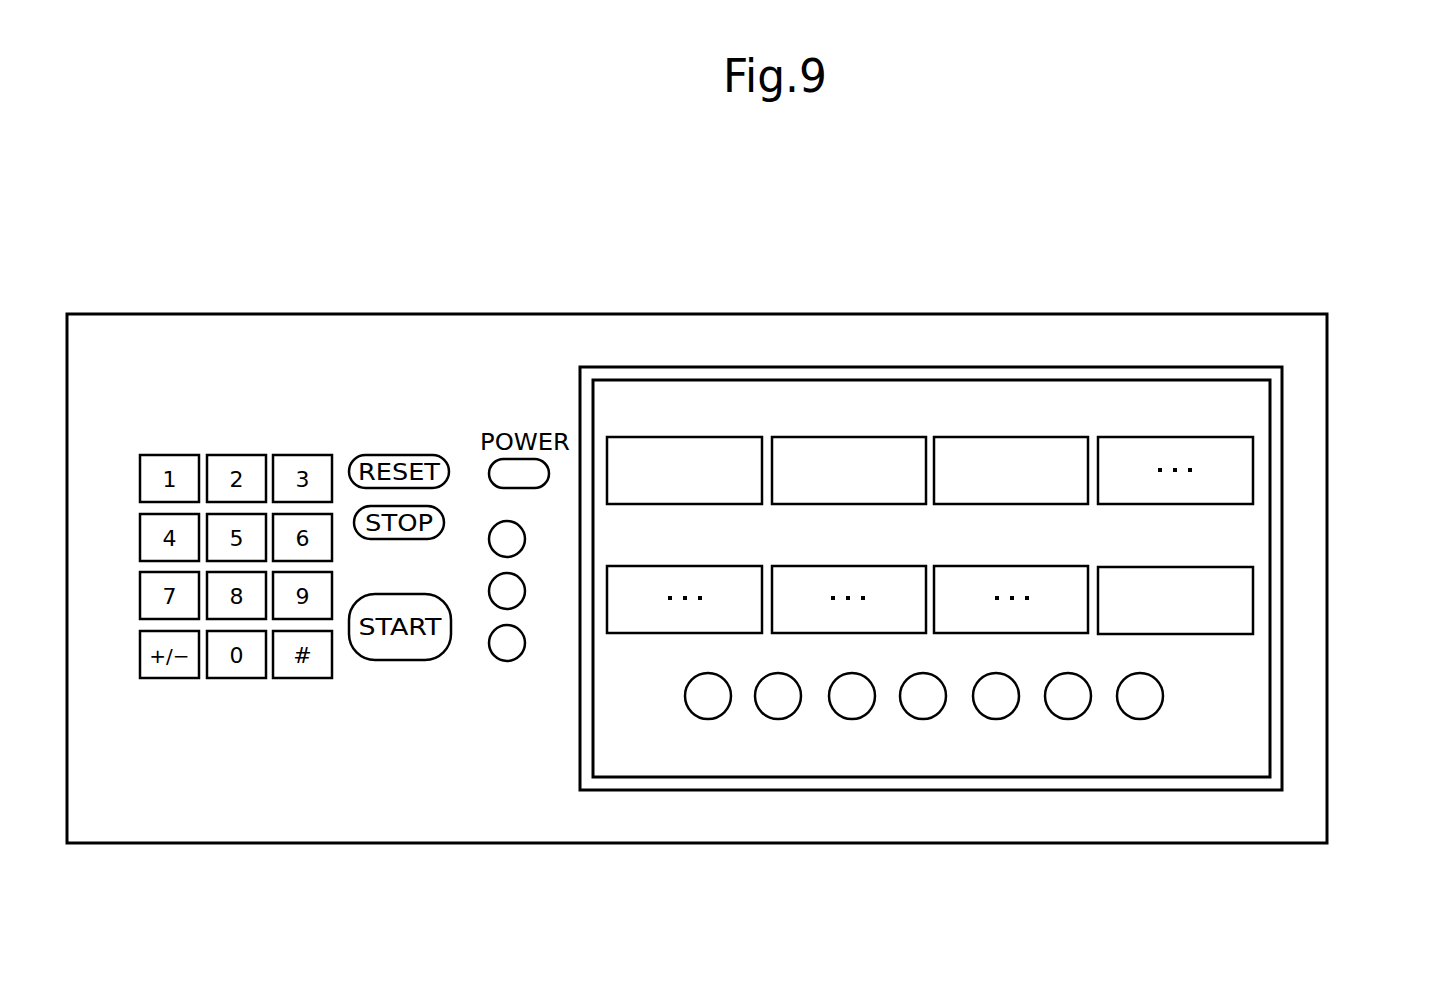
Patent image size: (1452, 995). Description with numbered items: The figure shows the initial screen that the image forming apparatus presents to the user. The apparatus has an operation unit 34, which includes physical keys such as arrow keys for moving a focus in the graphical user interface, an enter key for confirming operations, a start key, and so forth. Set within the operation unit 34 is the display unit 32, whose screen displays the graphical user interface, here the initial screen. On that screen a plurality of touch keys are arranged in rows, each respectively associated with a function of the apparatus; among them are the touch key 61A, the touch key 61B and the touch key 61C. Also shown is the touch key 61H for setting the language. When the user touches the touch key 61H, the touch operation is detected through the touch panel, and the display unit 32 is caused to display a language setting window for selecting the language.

The display unit 32 is at (1098, 367).
The operation unit 34 is at (1273, 314).
The touch key 61A is at (707, 436).
The touch key 61B is at (852, 436).
The touch key 61C is at (1005, 436).
The touch key for setting the language 61H is at (1253, 607).